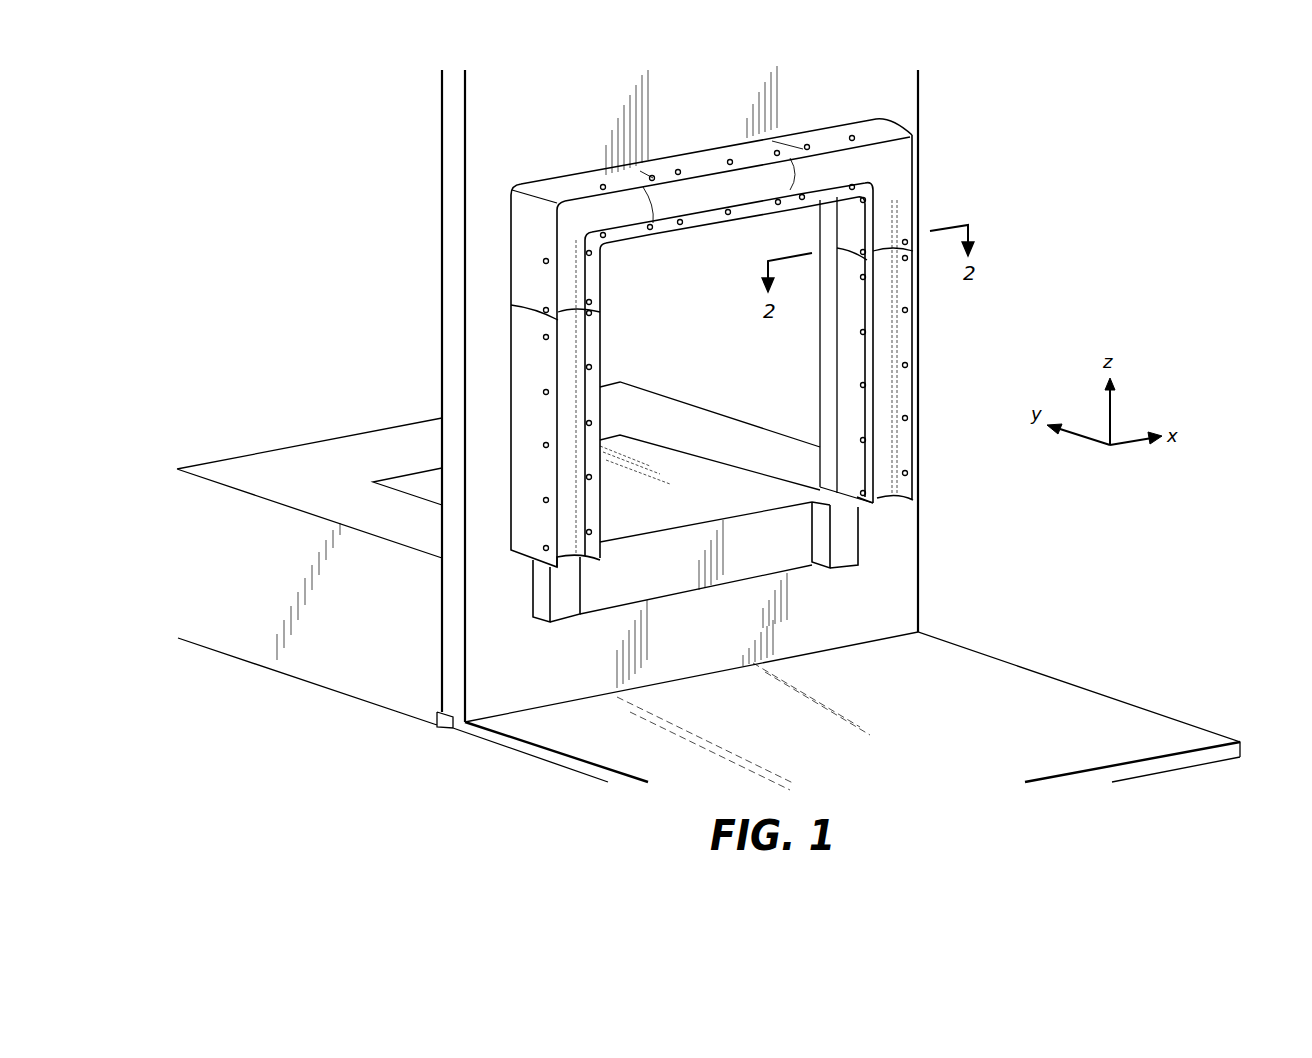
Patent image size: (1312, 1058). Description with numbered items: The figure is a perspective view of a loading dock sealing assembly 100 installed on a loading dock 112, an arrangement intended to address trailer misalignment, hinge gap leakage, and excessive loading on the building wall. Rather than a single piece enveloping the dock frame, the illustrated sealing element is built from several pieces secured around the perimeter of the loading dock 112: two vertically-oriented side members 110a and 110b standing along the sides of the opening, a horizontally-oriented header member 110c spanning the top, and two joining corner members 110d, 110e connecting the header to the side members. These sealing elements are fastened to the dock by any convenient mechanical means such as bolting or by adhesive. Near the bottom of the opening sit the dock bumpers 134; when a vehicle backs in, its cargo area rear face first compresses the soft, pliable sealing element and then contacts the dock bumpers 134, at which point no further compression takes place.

The loading dock sealing assembly 100 is at (362, 113).
The vertically-oriented side member 110a is at (905, 406).
The vertically-oriented side member 110b is at (520, 546).
The horizontally-oriented header member 110c is at (722, 153).
The joining corner member 110d is at (575, 183).
The joining corner member 110e is at (840, 131).
The loading dock 112 is at (744, 357).
The dock bumpers 134 is at (565, 608).